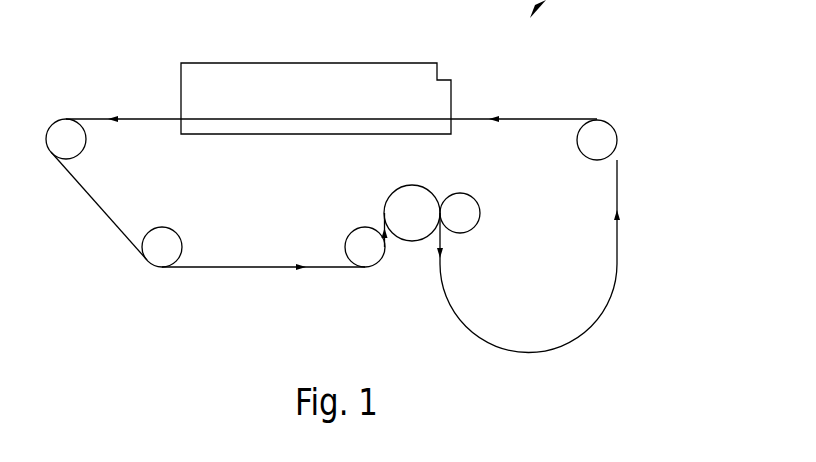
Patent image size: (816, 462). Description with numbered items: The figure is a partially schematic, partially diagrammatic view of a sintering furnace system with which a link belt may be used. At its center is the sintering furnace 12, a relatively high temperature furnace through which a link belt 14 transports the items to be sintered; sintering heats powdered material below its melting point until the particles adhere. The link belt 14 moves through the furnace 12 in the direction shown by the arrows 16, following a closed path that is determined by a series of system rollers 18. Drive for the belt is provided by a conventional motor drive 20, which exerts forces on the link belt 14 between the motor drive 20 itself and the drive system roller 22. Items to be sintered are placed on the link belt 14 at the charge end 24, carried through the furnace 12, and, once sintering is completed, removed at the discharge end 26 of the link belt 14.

The sintering furnace 12 is at (331, 63).
The link belt 14 is at (97, 206).
The arrows 16 is at (325, 268).
The system rollers 18 is at (84, 152).
The motor drive 20 is at (415, 242).
The drive system roller 22 is at (480, 210).
The charge end 24 is at (615, 128).
The discharge end 26 is at (53, 121).